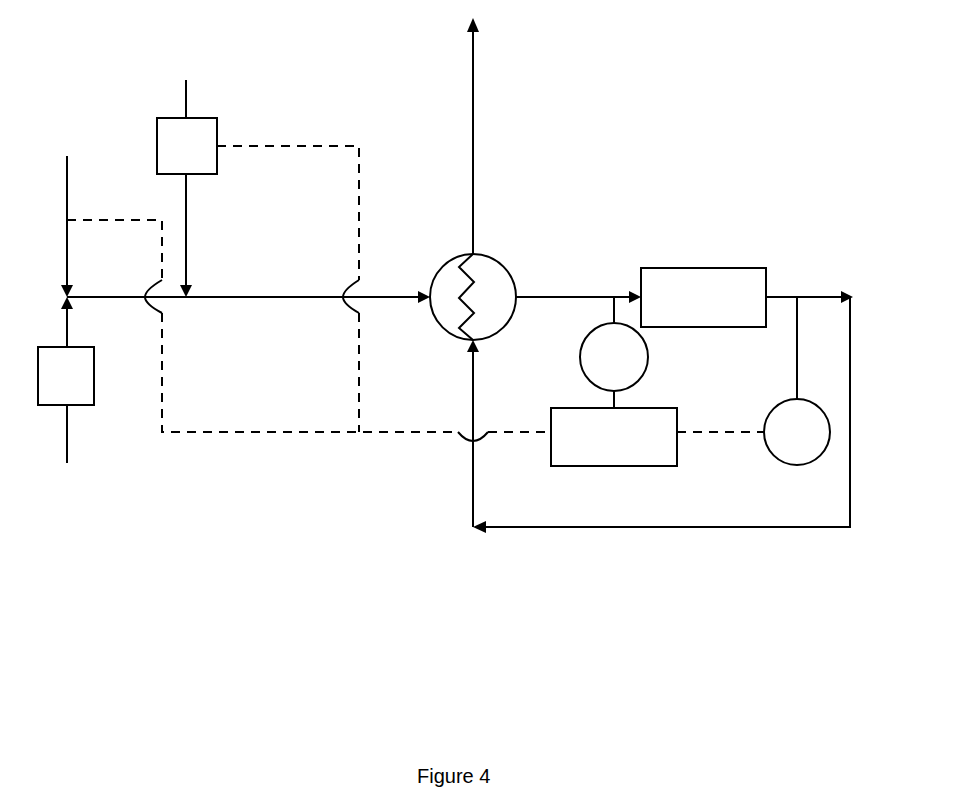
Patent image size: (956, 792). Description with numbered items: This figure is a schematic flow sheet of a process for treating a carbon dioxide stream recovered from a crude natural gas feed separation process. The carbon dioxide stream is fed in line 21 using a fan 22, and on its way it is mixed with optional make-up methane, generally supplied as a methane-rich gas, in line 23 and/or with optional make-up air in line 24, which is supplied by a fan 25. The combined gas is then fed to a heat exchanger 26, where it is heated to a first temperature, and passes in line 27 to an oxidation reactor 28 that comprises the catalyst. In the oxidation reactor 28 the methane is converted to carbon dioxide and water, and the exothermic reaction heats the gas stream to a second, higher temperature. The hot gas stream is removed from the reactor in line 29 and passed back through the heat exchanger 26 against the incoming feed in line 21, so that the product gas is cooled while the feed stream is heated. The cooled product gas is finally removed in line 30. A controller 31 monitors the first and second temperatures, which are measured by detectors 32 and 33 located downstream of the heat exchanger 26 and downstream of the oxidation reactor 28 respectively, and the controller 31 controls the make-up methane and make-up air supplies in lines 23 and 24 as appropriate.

The line 21 is at (65, 428).
The fan 22 is at (94, 372).
The line 23 is at (67, 215).
The line 24 is at (186, 222).
The fan 25 is at (217, 118).
The heat exchanger 26 is at (493, 255).
The line 27 is at (564, 297).
The oxidation reactor 28 is at (711, 268).
The line 29 is at (675, 527).
The line 30 is at (473, 113).
The controller 31 is at (627, 466).
The detector 32 is at (580, 352).
The detector 33 is at (790, 400).